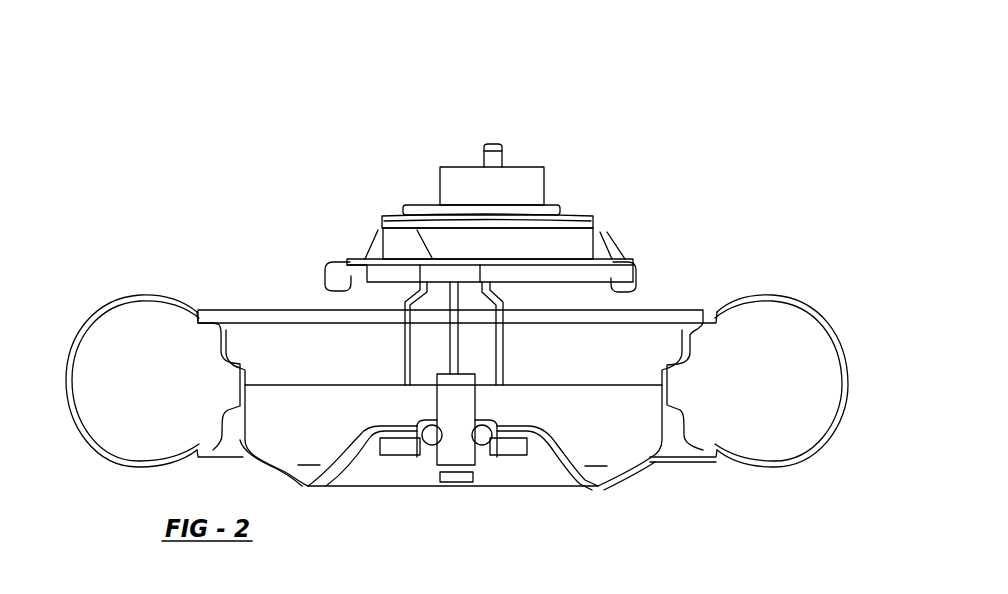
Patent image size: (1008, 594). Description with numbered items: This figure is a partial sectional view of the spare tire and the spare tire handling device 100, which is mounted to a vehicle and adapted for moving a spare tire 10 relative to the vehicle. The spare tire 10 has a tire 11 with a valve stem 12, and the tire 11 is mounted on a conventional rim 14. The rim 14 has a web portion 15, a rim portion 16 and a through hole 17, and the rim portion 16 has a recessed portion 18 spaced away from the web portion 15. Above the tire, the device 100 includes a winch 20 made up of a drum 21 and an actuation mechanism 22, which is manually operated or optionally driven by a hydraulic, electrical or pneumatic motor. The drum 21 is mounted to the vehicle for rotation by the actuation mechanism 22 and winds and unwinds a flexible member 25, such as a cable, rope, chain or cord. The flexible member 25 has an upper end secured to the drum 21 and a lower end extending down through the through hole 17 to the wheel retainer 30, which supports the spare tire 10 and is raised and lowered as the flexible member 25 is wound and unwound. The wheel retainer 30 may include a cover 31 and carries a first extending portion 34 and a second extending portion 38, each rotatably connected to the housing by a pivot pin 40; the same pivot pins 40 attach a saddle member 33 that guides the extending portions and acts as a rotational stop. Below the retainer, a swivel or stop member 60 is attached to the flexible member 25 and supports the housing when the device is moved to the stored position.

The spare tire handling device 100 is at (787, 207).
The spare tire 10 is at (818, 462).
The tire 11 is at (795, 300).
The valve stem 12 is at (243, 460).
The rim 14 is at (667, 477).
The web portion 15 is at (573, 488).
The rim portion 16 is at (231, 351).
The through hole 17 is at (489, 416).
The recessed portion 18 is at (700, 313).
The winch 20 is at (595, 201).
The drum 21 is at (563, 188).
The actuation mechanism 22 is at (503, 158).
The flexible member 25 is at (462, 352).
The wheel retainer 30 is at (479, 401).
The cover 31 is at (437, 406).
The saddle member 33 is at (432, 468).
The first extending portion 34 is at (512, 462).
The second extending portion 38 is at (385, 454).
The pivot pin 40 is at (428, 448).
The stop member 60 is at (460, 488).